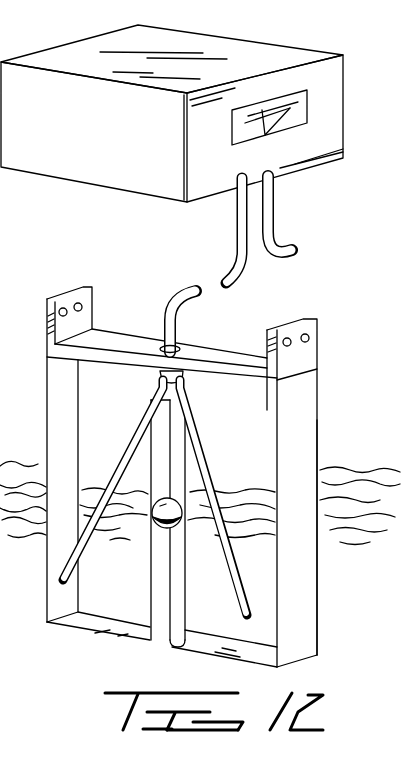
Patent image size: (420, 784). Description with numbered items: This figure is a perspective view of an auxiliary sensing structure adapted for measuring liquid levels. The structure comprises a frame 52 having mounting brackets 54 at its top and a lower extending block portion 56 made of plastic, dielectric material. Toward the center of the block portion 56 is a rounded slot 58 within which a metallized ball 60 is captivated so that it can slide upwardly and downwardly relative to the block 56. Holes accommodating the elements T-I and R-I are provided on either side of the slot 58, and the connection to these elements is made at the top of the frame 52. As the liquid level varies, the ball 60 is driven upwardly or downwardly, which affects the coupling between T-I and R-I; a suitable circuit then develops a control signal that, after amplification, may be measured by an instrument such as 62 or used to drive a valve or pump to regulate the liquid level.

The frame 52 is at (326, 371).
The mounting brackets 54 is at (302, 321).
The lower extending block portion 56 is at (313, 472).
The rounded slot 58 is at (151, 606).
The metallized ball 60 is at (157, 528).
The instrument 62 is at (317, 168).
The transmitting element T-I is at (128, 437).
The receiving element R-I is at (203, 452).